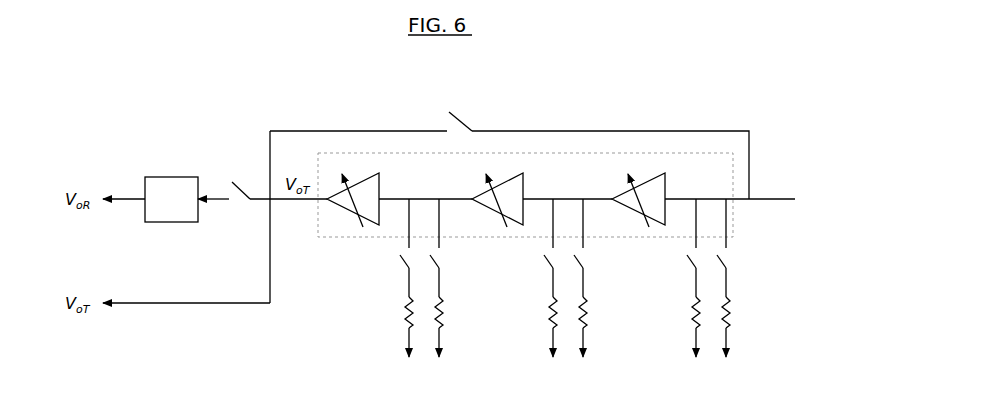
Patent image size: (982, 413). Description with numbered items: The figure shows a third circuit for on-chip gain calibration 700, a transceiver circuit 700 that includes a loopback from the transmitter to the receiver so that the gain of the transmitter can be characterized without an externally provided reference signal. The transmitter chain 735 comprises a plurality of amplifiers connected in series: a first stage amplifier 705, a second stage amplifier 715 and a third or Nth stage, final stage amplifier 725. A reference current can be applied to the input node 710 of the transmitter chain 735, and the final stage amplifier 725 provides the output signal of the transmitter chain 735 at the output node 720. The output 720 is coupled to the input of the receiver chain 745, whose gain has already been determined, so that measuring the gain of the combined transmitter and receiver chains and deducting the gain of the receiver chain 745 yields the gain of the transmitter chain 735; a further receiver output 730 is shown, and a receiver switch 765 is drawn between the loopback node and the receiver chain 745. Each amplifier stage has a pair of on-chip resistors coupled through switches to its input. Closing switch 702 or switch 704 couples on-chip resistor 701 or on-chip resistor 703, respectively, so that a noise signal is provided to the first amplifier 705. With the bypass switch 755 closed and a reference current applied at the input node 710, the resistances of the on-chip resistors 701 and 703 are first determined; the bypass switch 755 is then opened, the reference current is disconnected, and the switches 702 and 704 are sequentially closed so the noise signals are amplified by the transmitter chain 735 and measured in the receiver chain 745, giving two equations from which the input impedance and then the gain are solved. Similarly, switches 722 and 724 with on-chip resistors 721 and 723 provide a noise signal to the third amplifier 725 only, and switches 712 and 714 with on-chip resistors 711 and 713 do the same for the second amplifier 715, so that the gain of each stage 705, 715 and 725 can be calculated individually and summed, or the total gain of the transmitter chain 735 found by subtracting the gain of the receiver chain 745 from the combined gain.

The circuit for on-chip gain calibration 700 is at (707, 92).
The on-chip resistor 701 is at (733, 310).
The switch 702 is at (732, 262).
The on-chip resistor 703 is at (688, 313).
The switch 704 is at (685, 267).
The first stage amplifier 705 is at (668, 178).
The input node 710 is at (775, 195).
The on-chip resistor 711 is at (590, 325).
The switch 712 is at (590, 262).
The on-chip resistor 713 is at (544, 312).
The switch 714 is at (542, 265).
The second stage amplifier 715 is at (527, 178).
The output node 720 is at (297, 208).
The on-chip resistor 721 is at (445, 325).
The switch 722 is at (445, 262).
The on-chip resistor 723 is at (398, 312).
The switch 724 is at (395, 262).
The final stage amplifier 725 is at (383, 178).
The receiver output 730 is at (128, 203).
The transmitter chain 735 is at (604, 151).
The receiver chain 745 is at (172, 223).
The bypass switch 755 is at (463, 111).
The receiver switch 765 is at (237, 181).